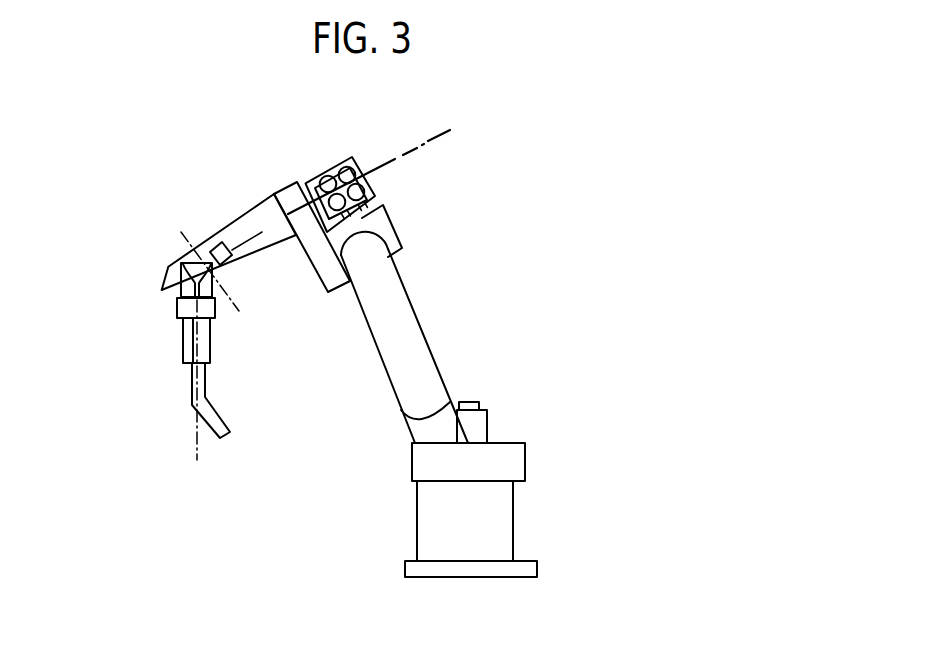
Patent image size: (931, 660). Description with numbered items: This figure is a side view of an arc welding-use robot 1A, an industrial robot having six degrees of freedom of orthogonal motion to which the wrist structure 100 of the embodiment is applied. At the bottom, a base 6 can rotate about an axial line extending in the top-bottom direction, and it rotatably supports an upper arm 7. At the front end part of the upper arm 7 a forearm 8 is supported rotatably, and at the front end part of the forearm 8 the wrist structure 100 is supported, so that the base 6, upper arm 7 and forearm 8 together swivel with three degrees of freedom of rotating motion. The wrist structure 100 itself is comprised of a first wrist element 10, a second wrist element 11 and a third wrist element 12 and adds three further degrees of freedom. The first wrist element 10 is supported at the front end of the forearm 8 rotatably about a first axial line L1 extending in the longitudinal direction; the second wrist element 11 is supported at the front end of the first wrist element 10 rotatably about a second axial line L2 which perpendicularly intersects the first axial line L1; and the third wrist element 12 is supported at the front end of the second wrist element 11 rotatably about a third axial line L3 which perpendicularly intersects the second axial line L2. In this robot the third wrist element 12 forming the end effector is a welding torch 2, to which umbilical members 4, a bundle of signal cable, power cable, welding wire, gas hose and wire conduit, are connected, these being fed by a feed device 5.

The arc welding-use robot 1A is at (534, 205).
The wrist structure 100 is at (226, 210).
The welding torch 2 is at (203, 417).
The third wrist element 12 is at (203, 368).
The umbilical members 4 is at (262, 232).
The feed device 5 is at (334, 163).
The base 6 is at (495, 518).
The upper arm 7 is at (413, 345).
The forearm 8 is at (388, 220).
The first wrist element 10 is at (290, 239).
The second wrist element 11 is at (178, 263).
The first axial line L1 is at (433, 140).
The second axial line L2 is at (239, 311).
The third axial line L3 is at (195, 343).